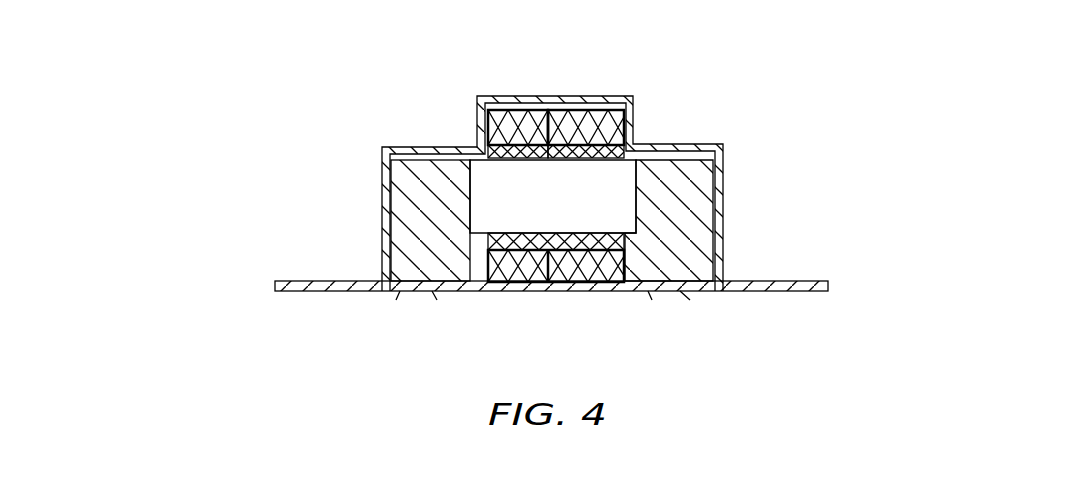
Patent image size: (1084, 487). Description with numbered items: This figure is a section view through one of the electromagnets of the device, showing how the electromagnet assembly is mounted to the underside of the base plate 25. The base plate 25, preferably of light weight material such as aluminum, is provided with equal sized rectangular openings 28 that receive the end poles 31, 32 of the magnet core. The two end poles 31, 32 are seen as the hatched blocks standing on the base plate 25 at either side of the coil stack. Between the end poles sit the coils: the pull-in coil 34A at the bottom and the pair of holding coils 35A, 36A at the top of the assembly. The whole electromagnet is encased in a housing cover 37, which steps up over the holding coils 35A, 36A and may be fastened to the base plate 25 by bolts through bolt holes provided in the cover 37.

The base plate 25 is at (333, 278).
The rectangular openings 28 is at (402, 292).
The end pole 31 is at (428, 287).
The end pole 32 is at (680, 280).
The pull-in coil 34A is at (592, 246).
The holding coil 35A is at (515, 108).
The holding coil 36A is at (590, 113).
The housing cover 37 is at (380, 160).